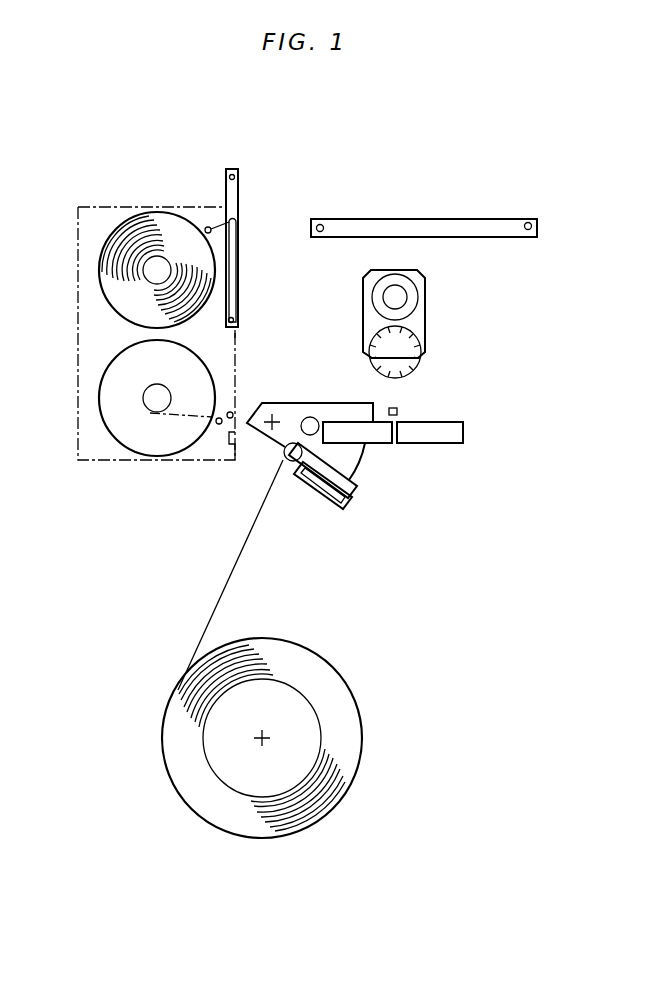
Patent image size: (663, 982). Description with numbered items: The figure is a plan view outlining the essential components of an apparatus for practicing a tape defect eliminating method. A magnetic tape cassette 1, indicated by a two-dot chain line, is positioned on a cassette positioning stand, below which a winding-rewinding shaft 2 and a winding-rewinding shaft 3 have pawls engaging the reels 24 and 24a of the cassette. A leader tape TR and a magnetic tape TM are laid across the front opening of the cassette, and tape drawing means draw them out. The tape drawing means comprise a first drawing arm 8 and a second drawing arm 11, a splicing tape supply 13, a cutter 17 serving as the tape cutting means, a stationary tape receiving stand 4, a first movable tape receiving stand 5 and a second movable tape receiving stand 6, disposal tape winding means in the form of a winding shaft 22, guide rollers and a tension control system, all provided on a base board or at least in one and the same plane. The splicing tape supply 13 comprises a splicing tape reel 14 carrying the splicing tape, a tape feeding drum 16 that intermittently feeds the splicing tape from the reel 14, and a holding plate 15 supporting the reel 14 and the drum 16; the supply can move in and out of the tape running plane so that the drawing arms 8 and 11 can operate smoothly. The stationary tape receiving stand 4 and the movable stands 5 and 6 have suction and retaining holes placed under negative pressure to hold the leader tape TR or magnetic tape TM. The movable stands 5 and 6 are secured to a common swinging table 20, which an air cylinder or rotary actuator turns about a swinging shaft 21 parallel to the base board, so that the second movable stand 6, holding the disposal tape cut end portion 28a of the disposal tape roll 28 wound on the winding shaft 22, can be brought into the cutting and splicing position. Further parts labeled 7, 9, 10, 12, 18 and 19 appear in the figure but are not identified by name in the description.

The magnetic tape cassette 1 is at (105, 465).
The winding-rewinding shaft 2 is at (150, 262).
The winding-rewinding shaft 3 is at (150, 403).
The stationary tape receiving stand 4 is at (455, 444).
The first movable tape receiving stand 5 is at (383, 444).
The second movable tape receiving stand 6 is at (351, 500).
The pin 7 is at (238, 322).
The first drawing arm 8 is at (239, 245).
The slide bar 9 is at (234, 172).
The hole 10 is at (318, 221).
The second drawing arm 11 is at (417, 218).
The hole 12 is at (529, 221).
The splicing tape supply 13 is at (481, 270).
The splicing tape reel 14 is at (410, 292).
The holding plate 15 is at (418, 325).
The tape feeding drum 16 is at (420, 362).
The cutter 17 is at (399, 410).
The guide roller 18 is at (311, 417).
The guide roller 19 is at (292, 462).
The swinging table 20 is at (352, 458).
The swinging shaft 21 is at (267, 438).
The winding shaft 22 is at (320, 738).
The reel 24 is at (100, 273).
The reel 24a is at (100, 380).
The disposal tape roll 28 is at (173, 755).
The disposal tape cut end portion 28a is at (249, 533).
The magnetic tape TM is at (176, 208).
The leader tape TR is at (170, 415).